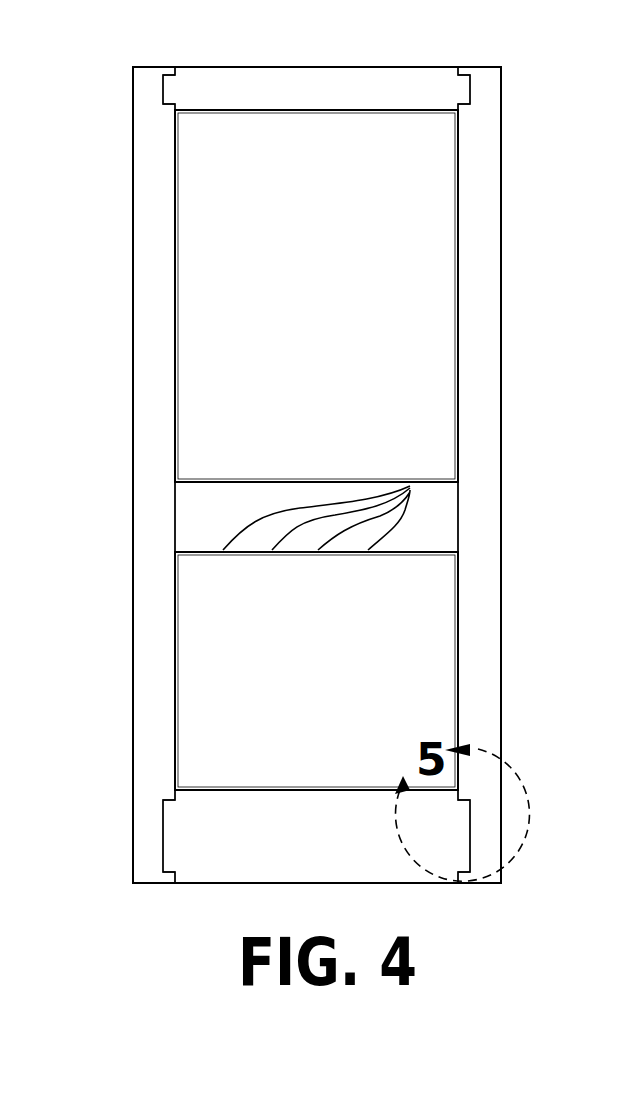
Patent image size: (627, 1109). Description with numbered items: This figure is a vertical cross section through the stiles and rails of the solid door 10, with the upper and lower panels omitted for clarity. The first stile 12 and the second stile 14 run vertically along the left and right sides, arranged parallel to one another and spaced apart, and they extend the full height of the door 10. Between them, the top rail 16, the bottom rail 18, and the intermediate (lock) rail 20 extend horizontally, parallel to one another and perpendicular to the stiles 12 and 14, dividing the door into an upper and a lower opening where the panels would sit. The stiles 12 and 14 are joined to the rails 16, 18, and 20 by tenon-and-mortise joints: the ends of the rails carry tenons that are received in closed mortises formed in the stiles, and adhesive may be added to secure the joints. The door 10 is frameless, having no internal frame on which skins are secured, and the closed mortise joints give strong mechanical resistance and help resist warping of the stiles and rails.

The solid door 10 is at (100, 98).
The first stile 12 is at (133, 252).
The second stile 14 is at (501, 252).
The top rail 16 is at (345, 77).
The bottom rail 18 is at (315, 795).
The intermediate (lock) rail 20 is at (313, 484).